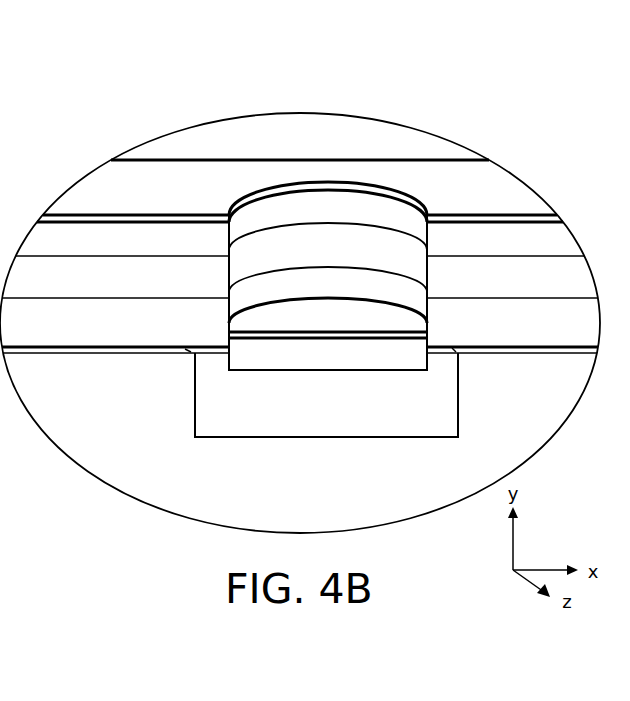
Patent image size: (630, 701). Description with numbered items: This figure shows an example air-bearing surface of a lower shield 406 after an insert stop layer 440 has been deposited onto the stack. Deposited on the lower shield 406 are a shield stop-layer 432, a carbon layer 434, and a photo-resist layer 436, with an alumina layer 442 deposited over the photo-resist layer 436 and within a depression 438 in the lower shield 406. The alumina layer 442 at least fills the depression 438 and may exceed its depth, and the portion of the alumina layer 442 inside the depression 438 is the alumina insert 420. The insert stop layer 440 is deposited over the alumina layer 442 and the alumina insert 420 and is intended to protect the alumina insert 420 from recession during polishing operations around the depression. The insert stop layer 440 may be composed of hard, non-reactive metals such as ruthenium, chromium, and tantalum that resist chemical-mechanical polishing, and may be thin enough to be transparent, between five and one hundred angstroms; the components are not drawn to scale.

The lower shield 406 is at (312, 415).
The alumina insert 420 is at (313, 366).
The shield stop-layer 432 is at (482, 355).
The carbon layer 434 is at (116, 333).
The photo-resist layer 436 is at (117, 288).
The depression 438 is at (284, 350).
The insert stop layer 440 is at (117, 196).
The alumina layer 442 is at (117, 250).